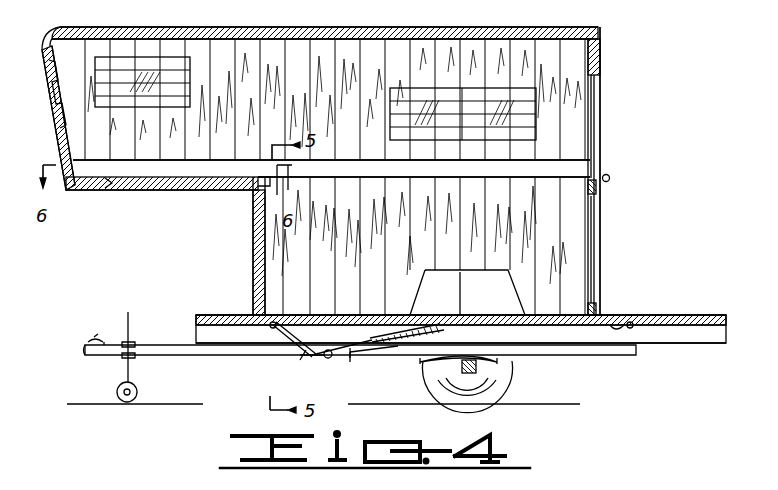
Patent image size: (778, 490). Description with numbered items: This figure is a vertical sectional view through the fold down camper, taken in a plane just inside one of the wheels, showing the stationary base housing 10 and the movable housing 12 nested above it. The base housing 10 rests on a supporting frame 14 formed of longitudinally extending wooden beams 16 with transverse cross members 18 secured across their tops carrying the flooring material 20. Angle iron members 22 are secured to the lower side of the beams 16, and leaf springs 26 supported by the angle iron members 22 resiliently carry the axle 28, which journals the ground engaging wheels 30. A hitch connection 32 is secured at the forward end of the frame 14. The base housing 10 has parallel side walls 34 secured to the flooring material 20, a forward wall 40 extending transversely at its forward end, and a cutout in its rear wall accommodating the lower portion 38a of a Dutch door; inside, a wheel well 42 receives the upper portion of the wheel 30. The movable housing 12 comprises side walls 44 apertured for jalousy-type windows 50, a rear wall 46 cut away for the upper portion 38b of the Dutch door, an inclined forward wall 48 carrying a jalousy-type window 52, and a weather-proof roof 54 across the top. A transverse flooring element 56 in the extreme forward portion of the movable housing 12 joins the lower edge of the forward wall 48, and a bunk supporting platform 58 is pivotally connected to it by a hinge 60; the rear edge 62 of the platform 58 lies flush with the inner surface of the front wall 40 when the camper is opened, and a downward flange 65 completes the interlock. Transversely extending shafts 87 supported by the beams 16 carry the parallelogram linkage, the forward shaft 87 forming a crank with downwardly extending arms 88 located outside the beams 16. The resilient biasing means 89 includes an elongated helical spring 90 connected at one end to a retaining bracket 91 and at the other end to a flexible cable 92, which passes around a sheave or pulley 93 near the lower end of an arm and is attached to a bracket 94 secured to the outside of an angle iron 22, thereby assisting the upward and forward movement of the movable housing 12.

The base housing 10 is at (608, 224).
The movable housing 12 is at (606, 82).
The supporting frame 14 is at (714, 314).
The wooden beams 16 is at (685, 340).
The cross members 18 is at (631, 314).
The flooring material 20 is at (695, 314).
The angle iron members 22 is at (233, 356).
The leaf springs 26 is at (422, 364).
The axle 28 is at (472, 368).
The ground engaging wheels 30 is at (505, 370).
The hitch connection 32 is at (155, 343).
The side walls 34 is at (380, 221).
The lower portion of Dutch door 38a is at (601, 258).
The upper portion of Dutch door 38b is at (603, 124).
The forward wall 40 is at (253, 243).
The wheel wells 42 is at (430, 291).
The side walls 44 is at (364, 90).
The rear wall 46 is at (604, 46).
The inclined forward wall 48 is at (52, 144).
The jalousy-type windows 50 is at (138, 57).
The jalousy-type window 52 is at (52, 90).
The roof 54 is at (335, 28).
The transverse flooring element 56 is at (75, 192).
The bunk supporting platform 58 is at (160, 192).
The hinge 60 is at (108, 192).
The rear edge of bunk supporting platform 62 is at (263, 180).
The flange 65 is at (292, 190).
The shafts 87 is at (270, 326).
The arms 88 is at (298, 352).
The resilient biasing means 89 is at (352, 362).
The helical spring 90 is at (425, 330).
The retaining bracket 91 is at (452, 314).
The flexible cable 92 is at (342, 358).
The sheave or pulley 93 is at (336, 348).
The bracket 94 is at (386, 352).